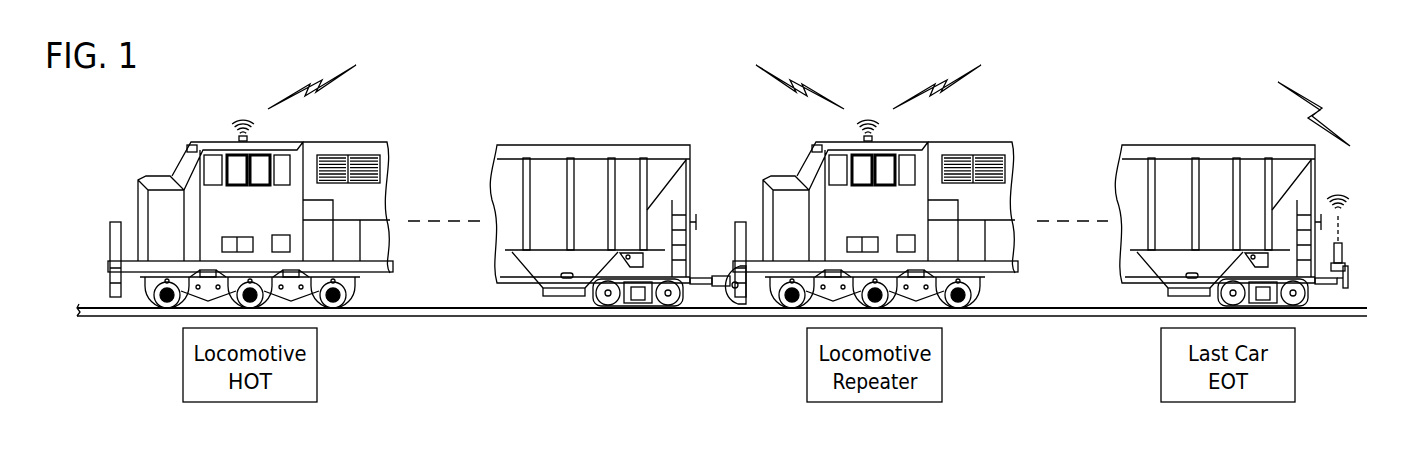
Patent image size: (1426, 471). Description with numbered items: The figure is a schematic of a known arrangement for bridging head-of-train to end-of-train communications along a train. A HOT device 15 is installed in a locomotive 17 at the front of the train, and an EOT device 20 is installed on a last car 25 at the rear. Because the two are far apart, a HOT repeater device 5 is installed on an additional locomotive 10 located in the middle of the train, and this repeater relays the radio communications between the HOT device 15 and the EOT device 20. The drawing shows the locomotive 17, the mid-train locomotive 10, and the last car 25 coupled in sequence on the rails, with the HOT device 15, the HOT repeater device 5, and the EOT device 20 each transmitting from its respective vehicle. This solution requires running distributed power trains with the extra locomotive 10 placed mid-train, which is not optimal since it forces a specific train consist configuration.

The HOT repeater device 5 is at (871, 97).
The locomotive 10 is at (975, 142).
The HOT device 15 is at (244, 97).
The locomotive 17 is at (343, 142).
The EOT device 20 is at (1360, 253).
The last car 25 is at (1175, 146).